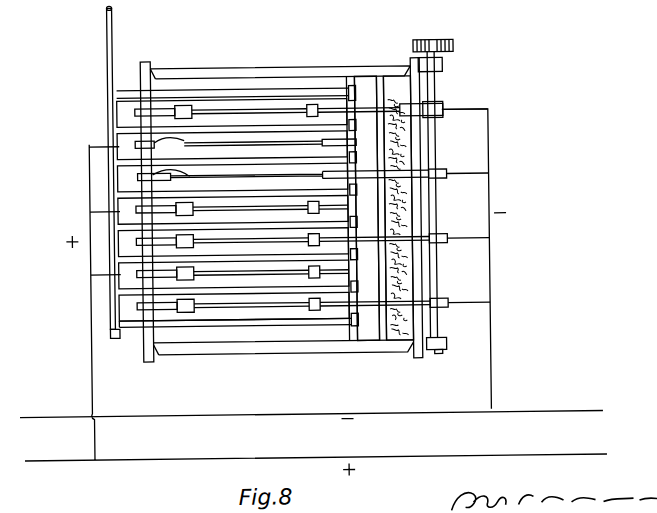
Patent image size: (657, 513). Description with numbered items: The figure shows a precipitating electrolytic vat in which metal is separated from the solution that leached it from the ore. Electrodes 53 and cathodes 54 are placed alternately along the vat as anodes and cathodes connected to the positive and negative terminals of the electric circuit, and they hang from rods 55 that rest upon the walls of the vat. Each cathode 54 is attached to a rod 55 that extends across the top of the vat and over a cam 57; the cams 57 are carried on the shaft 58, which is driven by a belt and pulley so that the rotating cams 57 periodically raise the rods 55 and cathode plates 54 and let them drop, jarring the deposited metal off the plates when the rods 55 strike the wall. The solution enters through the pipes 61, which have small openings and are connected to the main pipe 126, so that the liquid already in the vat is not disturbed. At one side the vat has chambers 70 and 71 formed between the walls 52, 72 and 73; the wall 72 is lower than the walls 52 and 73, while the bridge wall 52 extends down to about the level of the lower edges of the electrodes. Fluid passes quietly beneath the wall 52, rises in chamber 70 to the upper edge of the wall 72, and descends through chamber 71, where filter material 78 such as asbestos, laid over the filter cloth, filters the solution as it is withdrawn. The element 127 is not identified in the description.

The main pipe 126 is at (115, 27).
The top cross bar 127 is at (199, 73).
The pipes 61 is at (289, 94).
The side wall 52 is at (345, 79).
The chamber 70 is at (366, 208).
The chamber 71 is at (398, 208).
The wall 72 is at (380, 79).
The wall 73 is at (415, 87).
The filter material 78 is at (402, 155).
The shaft 58 is at (440, 203).
The cam 57 is at (449, 301).
The rod 55 is at (402, 110).
The electrode 53 is at (136, 142).
The cathode 54 is at (137, 177).